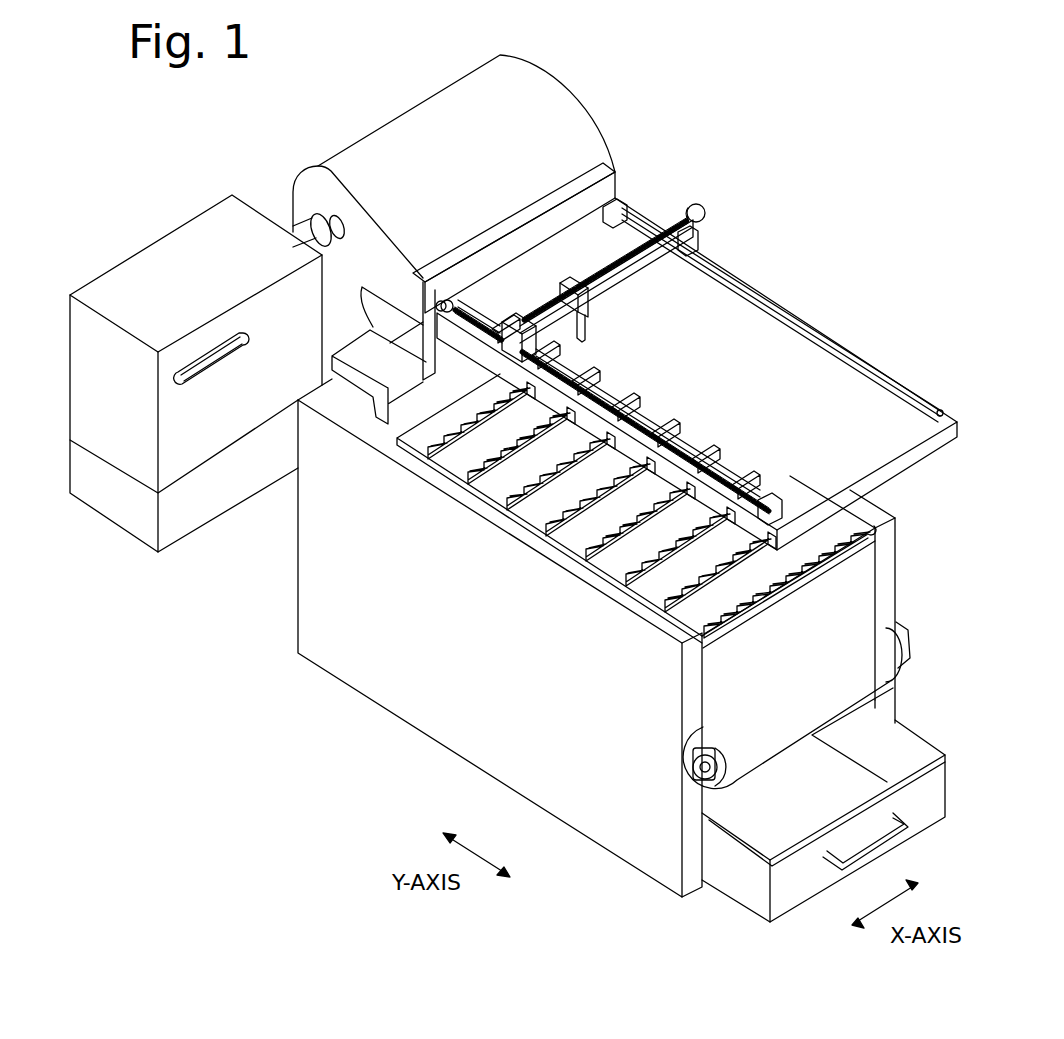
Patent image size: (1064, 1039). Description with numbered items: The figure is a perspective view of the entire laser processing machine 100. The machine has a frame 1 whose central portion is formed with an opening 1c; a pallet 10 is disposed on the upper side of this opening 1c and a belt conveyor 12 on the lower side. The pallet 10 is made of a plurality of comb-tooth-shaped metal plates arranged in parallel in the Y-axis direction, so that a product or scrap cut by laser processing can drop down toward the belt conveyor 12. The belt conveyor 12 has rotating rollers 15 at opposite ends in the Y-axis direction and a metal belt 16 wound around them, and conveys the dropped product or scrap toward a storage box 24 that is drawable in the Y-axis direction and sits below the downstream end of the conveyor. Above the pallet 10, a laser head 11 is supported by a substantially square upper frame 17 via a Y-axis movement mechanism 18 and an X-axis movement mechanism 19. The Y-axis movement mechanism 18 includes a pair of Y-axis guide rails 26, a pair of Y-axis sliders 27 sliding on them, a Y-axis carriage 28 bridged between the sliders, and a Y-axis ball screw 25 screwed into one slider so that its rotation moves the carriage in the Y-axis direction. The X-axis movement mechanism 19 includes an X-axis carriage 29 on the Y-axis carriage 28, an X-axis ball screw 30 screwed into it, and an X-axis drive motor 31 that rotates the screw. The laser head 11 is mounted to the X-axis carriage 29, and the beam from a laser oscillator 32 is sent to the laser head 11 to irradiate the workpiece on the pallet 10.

The laser processing machine 100 is at (887, 283).
The frame 1 is at (392, 680).
The opening 1c is at (872, 702).
The pallet 10 is at (841, 556).
The laser head 11 is at (588, 336).
The belt conveyor 12 is at (878, 670).
The rotating rollers 15 is at (700, 752).
The belt 16 is at (810, 637).
The upper frame 17 is at (922, 430).
The Y-axis movement mechanism 18 is at (630, 408).
The X-axis movement mechanism 19 is at (582, 270).
The storage box 24 is at (918, 813).
The Y-axis ball screw 25 is at (490, 317).
The Y-axis guide rails 26 is at (813, 327).
The Y-axis sliders 27 is at (698, 240).
The Y-axis carriage 28 is at (637, 258).
The X-axis carriage 29 is at (590, 300).
The X-axis ball screw 30 is at (603, 265).
The X-axis drive motor 31 is at (695, 205).
The laser oscillator 32 is at (168, 268).